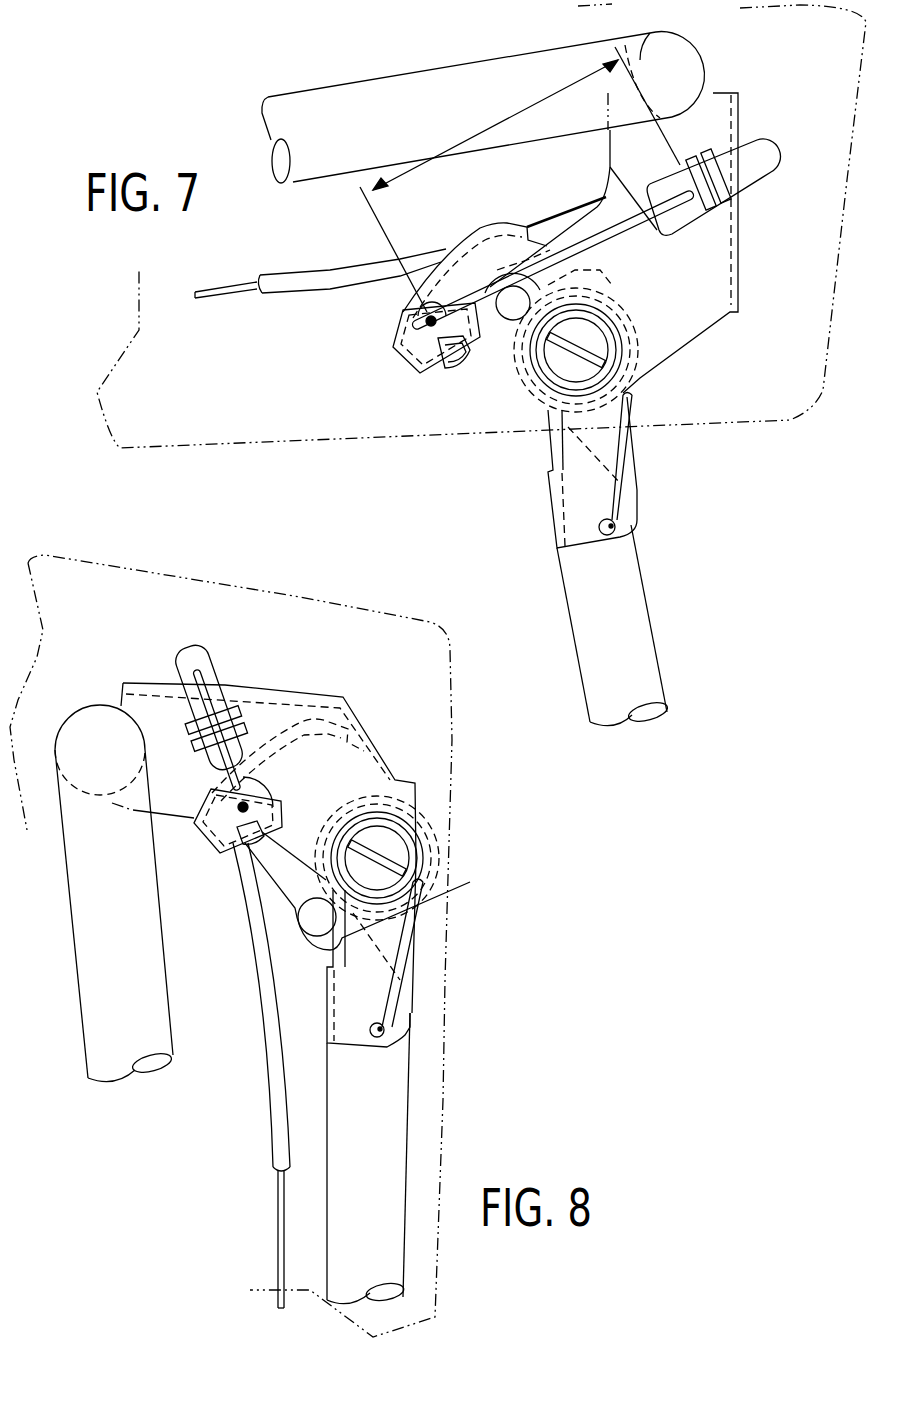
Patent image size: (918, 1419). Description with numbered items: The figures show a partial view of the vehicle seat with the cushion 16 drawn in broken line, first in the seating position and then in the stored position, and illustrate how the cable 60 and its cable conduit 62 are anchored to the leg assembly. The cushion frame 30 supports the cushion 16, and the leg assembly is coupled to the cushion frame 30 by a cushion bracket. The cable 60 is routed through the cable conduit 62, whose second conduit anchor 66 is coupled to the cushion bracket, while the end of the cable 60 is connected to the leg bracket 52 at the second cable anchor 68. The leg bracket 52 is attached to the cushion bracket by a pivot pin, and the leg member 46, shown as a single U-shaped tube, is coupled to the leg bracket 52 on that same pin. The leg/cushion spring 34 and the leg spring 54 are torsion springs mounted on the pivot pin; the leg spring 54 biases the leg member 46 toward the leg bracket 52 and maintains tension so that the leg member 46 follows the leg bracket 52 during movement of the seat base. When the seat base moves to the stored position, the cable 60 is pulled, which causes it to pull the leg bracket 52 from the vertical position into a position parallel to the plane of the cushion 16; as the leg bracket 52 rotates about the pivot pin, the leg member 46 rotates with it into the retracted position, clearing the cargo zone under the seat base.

In FIG. 7, the cushion 16 is at (790, 420).
In FIG. 8, the cushion 16 is at (450, 745).
In FIG. 7, the cushion frame 30 is at (432, 85).
In FIG. 8, the cushion frame 30 is at (90, 968).
In FIG. 7, the leg/cushion spring 34 is at (497, 373).
In FIG. 8, the leg/cushion spring 34 is at (330, 872).
In FIG. 7, the leg member 46 is at (643, 615).
In FIG. 8, the leg member 46 is at (400, 1125).
In FIG. 7, the leg bracket 52 is at (573, 500).
In FIG. 7, the leg spring 54 is at (633, 490).
In FIG. 8, the leg spring 54 is at (412, 1000).
In FIG. 7, the cable 60 is at (232, 285).
In FIG. 8, the cable 60 is at (276, 1229).
In FIG. 7, the cable conduit 62 is at (330, 270).
In FIG. 8, the cable conduit 62 is at (265, 1135).
In FIG. 7, the second conduit anchor 66 is at (740, 200).
In FIG. 7, the second cable anchor 68 is at (412, 320).